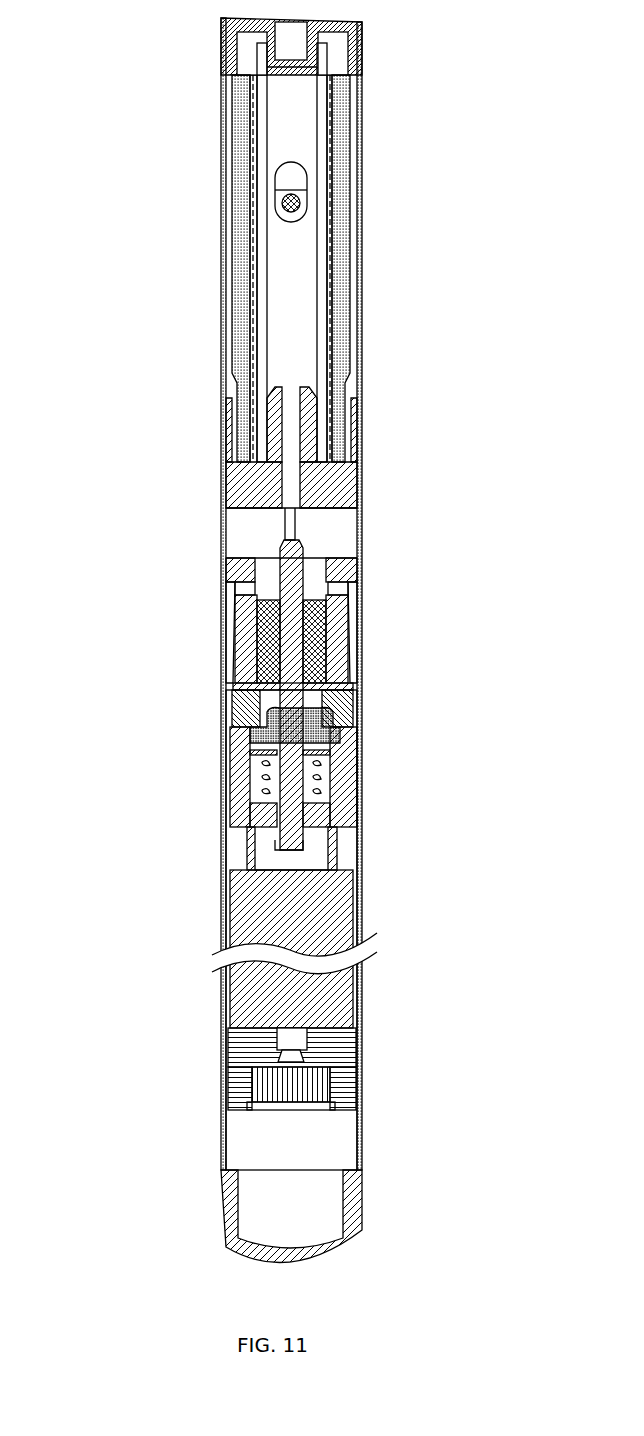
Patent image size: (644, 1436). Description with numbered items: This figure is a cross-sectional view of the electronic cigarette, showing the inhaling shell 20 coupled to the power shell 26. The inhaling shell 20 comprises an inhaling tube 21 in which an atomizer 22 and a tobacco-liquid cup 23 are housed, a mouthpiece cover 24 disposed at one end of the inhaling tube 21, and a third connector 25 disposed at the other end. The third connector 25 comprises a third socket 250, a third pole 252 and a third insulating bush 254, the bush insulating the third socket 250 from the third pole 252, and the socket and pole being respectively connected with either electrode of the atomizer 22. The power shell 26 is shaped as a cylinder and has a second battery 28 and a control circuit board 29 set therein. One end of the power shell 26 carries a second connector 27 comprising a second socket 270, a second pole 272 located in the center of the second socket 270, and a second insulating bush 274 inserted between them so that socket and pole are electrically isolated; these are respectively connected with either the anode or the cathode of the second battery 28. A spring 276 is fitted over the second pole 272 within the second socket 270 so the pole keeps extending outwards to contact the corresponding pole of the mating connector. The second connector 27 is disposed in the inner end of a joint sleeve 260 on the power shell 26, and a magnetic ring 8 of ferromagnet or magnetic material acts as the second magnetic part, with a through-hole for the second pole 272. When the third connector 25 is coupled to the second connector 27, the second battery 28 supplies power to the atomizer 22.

The inhaling shell 20 is at (404, 591).
The inhaling tube 21 is at (363, 167).
The atomizer 22 is at (300, 203).
The tobacco-liquid cup 23 is at (350, 252).
The mouthpiece cover 24 is at (363, 22).
The third connector 25 is at (371, 636).
The third socket 250 is at (360, 613).
The third pole 252 is at (360, 662).
The third insulating bush 254 is at (360, 636).
The magnetic ring 8 is at (338, 707).
The power shell 26 is at (206, 882).
The joint sleeve 260 is at (220, 615).
The second connector 27 is at (221, 789).
The second socket 270 is at (230, 827).
The second pole 272 is at (272, 780).
The second insulating bush 274 is at (230, 730).
The spring 276 is at (270, 792).
The second battery 28 is at (240, 915).
The control circuit board 29 is at (222, 1077).